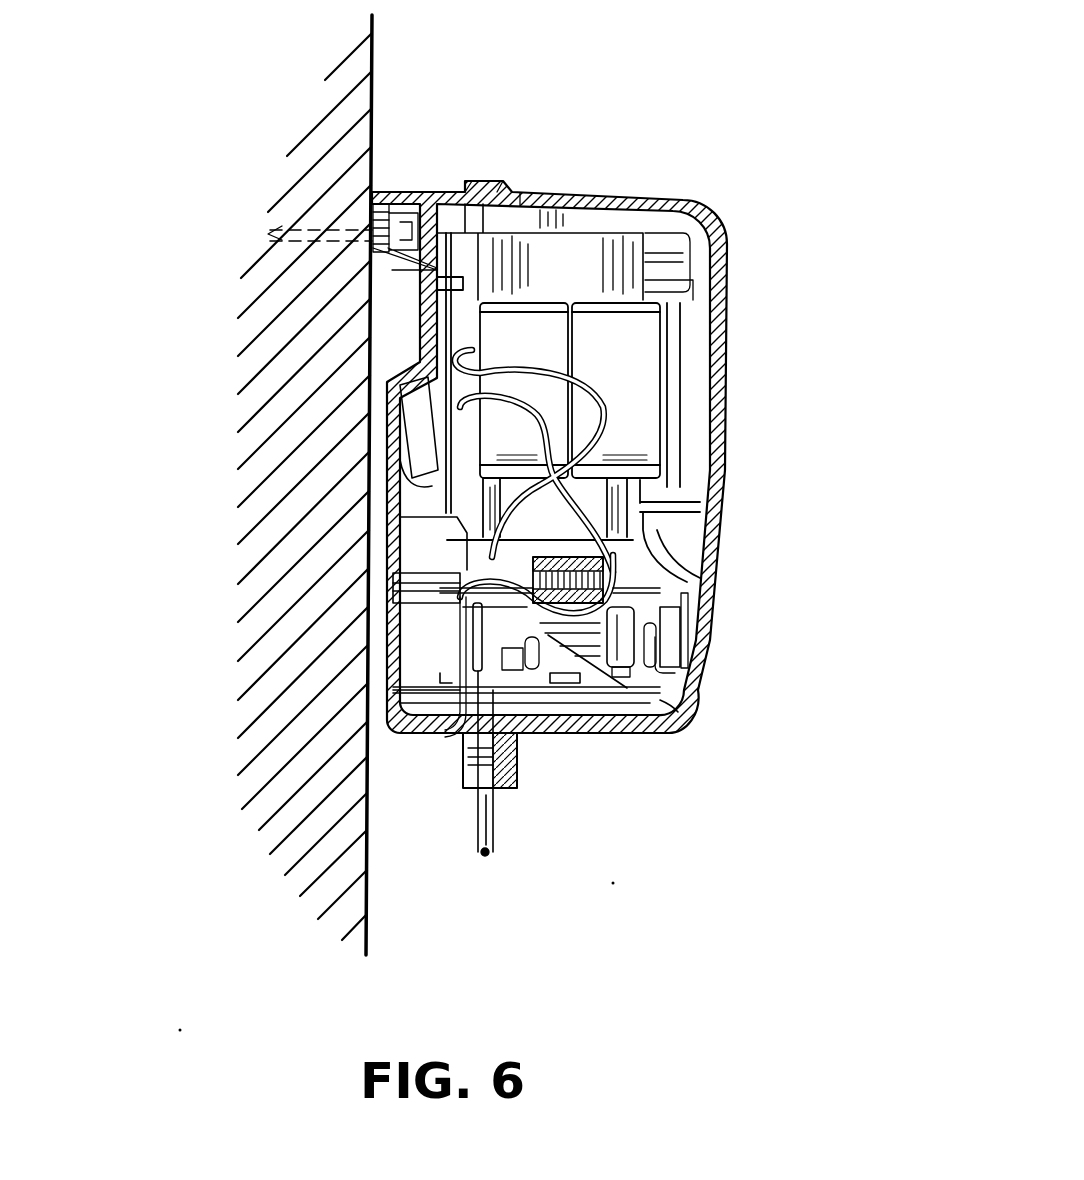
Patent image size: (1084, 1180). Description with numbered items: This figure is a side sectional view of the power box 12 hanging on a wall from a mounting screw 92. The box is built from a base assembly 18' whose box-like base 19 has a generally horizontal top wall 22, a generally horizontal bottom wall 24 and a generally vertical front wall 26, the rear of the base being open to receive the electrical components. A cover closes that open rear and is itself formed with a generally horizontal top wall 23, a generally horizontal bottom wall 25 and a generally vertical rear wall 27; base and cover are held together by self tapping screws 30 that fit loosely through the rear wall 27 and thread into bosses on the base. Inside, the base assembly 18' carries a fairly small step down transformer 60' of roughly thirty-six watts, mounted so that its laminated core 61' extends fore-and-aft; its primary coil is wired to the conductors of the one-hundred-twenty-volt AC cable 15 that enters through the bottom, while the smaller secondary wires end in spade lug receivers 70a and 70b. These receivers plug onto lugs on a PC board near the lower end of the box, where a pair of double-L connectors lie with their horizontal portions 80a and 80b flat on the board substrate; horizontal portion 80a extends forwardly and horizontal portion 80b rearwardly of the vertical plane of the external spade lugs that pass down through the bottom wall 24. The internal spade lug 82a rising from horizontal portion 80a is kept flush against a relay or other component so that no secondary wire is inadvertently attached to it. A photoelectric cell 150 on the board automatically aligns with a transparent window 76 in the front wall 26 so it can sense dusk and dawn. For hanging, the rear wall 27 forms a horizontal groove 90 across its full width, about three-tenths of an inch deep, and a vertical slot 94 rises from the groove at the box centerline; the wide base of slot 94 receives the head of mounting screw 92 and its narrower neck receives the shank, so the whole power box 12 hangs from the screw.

The power box 12 is at (580, 107).
The 120 VAC cable 15 is at (485, 856).
The base assembly 18' is at (583, 447).
The base 19 is at (742, 288).
The top wall 22 is at (577, 193).
The top wall 23 is at (418, 200).
The bottom wall 24 is at (592, 735).
The bottom wall 25 is at (437, 735).
The front wall 26 is at (733, 383).
The rear wall 27 is at (390, 497).
The self tapping screws 30 is at (580, 562).
The step down transformer 60' is at (540, 185).
The laminated core 61' is at (578, 213).
The spade lug receiver 70a is at (472, 628).
The spade lug receiver 70b is at (462, 650).
The transparent window 76 is at (683, 630).
The horizontal portion 80a is at (534, 645).
The horizontal portion 80b is at (462, 690).
The internal spade lug 82a is at (672, 710).
The horizontal groove 90 is at (403, 347).
The mounting screw 92 is at (398, 200).
The vertical slot 94 is at (366, 255).
The photoelectric cell 150 is at (655, 690).